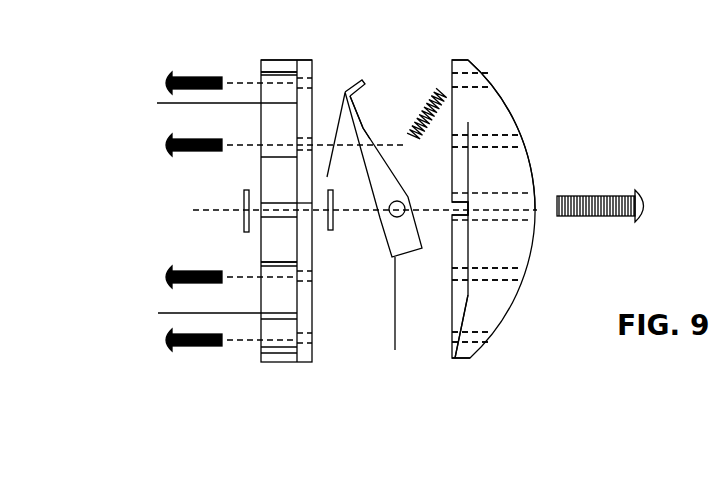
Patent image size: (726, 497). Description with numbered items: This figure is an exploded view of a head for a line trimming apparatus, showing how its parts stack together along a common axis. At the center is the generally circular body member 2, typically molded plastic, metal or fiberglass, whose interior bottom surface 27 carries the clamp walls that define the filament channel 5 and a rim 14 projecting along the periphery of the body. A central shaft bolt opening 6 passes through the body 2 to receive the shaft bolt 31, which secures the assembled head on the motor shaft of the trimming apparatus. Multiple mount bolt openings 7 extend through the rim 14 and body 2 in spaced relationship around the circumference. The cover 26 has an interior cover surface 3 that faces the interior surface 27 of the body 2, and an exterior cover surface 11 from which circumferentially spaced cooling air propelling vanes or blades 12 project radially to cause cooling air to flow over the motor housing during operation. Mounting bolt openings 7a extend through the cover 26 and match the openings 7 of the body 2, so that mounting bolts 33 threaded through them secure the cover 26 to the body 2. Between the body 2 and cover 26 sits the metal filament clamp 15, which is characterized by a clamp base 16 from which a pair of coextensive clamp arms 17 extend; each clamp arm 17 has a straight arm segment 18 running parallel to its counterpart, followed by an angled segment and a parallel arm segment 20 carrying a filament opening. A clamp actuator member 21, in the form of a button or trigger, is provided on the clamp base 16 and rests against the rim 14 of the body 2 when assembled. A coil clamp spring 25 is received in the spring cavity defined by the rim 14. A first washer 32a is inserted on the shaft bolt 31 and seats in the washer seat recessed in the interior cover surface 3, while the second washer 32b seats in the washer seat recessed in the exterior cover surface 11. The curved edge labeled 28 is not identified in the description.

The body member 2 is at (523, 125).
The interior cover surface 3 is at (298, 302).
The filament channel 5 is at (469, 207).
The shaft bolt opening 6 is at (305, 219).
The mount bolt openings 7 is at (481, 77).
The mounting bolt openings 7a is at (306, 78).
The exterior cover surface 11 is at (297, 250).
The cooling air propelling vanes 12 is at (260, 71).
The rim 14 is at (470, 62).
The filament clamp 15 is at (411, 260).
The clamp base 16 is at (327, 177).
The clamp arms 17 is at (366, 120).
The straight arm segment 18 is at (364, 128).
The parallel arm segment 20 is at (395, 350).
The clamp actuator member 21 is at (363, 80).
The coil clamp spring 25 is at (437, 80).
The cover 26 is at (285, 58).
The interior bottom surface 27 is at (455, 337).
The curved edge 28 is at (505, 102).
The shaft bolt 31 is at (612, 195).
The first washer 32a is at (333, 220).
The second washer 32b is at (242, 198).
The mounting bolts 33 is at (163, 81).